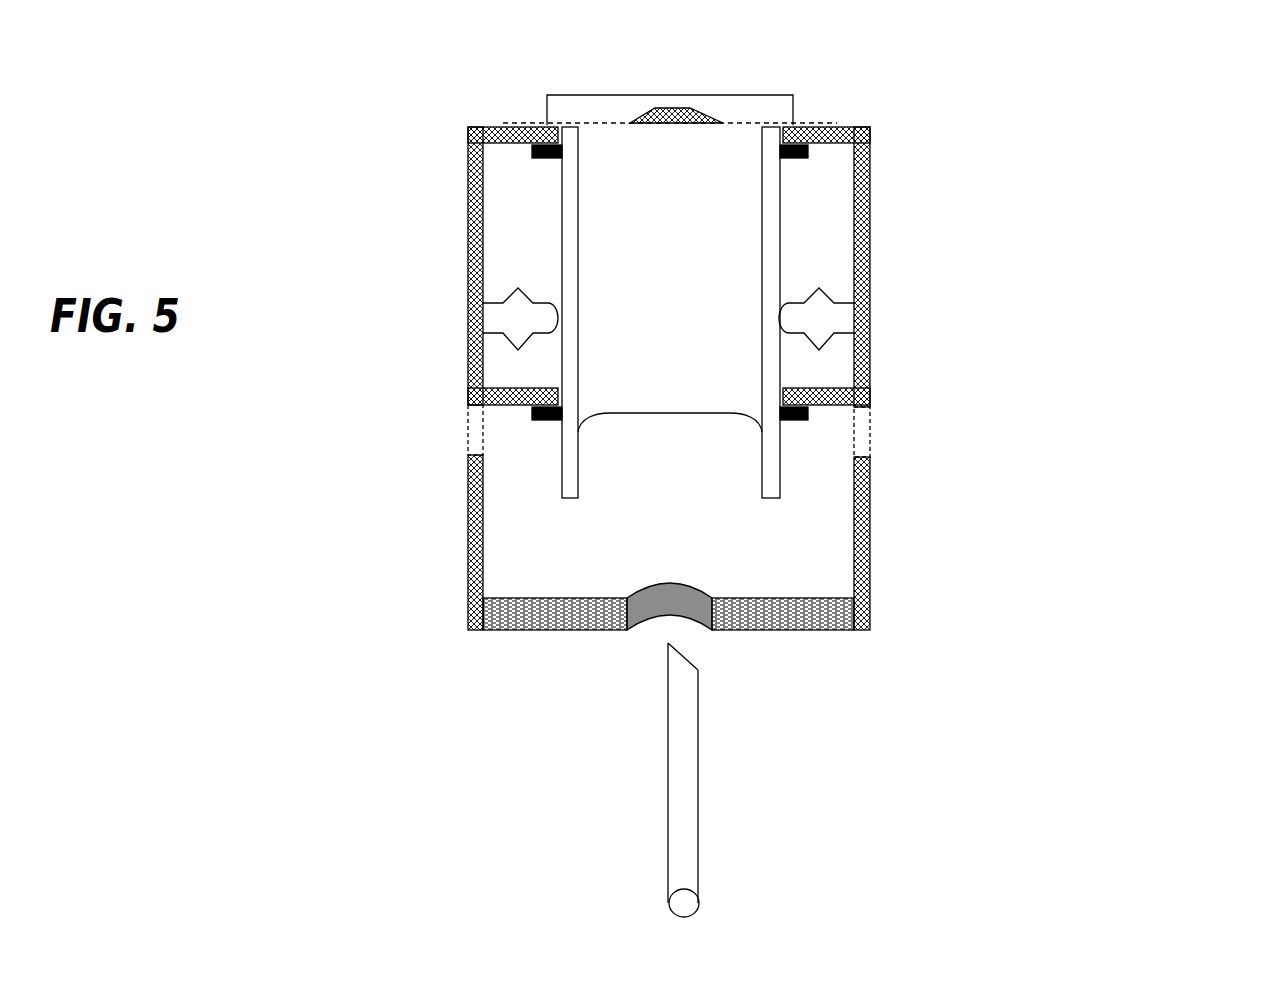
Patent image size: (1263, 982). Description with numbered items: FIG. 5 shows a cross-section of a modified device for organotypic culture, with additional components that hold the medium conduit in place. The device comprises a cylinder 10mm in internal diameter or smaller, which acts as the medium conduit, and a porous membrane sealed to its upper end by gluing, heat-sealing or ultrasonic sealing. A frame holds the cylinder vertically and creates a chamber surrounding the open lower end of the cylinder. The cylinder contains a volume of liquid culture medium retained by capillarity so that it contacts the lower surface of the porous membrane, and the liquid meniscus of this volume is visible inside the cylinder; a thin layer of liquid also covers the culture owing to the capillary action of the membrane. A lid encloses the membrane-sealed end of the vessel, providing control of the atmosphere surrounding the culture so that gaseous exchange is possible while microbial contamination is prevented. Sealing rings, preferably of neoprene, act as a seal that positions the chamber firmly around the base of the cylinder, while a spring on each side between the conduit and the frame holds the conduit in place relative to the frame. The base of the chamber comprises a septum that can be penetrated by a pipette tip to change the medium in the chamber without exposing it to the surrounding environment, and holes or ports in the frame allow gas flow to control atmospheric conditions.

The element frame is at (1165, 906).
The element septum is at (685, 628).
The element cylinder is at (766, 272).
The element lid is at (798, 109).
The element porous membrane is at (746, 124).
The element seal is at (530, 151).
The element spring is at (837, 318).
The element liquid meniscus is at (689, 416).
The element pipette tip is at (688, 841).
The cylinder internal diameter 10mm is at (761, 198).